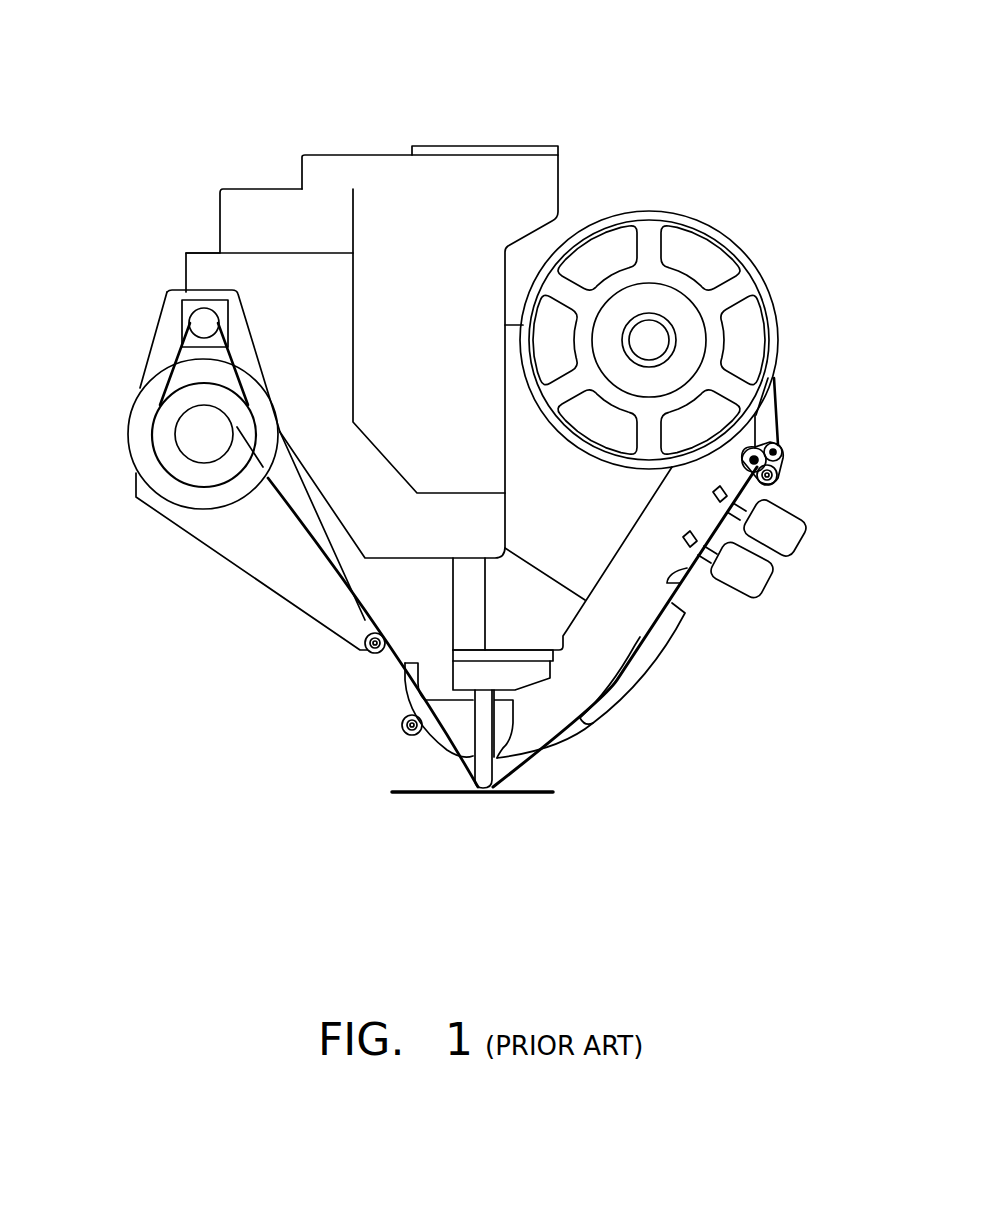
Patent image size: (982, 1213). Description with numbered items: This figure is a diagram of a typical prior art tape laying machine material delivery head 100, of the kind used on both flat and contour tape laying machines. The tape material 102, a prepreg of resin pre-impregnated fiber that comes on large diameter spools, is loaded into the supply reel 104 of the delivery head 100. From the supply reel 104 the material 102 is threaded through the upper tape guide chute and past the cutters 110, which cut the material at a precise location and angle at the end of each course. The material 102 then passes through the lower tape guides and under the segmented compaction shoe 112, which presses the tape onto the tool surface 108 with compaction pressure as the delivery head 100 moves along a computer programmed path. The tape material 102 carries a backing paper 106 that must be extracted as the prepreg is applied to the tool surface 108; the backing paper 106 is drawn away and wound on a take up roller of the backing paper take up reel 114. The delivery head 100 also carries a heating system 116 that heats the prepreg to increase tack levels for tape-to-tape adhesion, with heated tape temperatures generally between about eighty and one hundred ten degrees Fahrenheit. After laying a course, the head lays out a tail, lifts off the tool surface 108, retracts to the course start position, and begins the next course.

The material delivery head 100 is at (510, 79).
The tape material 102 is at (780, 445).
The supply reel 104 is at (647, 230).
The backing paper 106 is at (307, 533).
The tool surface 108 is at (560, 770).
The cutters 110 is at (783, 540).
The segmented compaction shoe 112 is at (460, 763).
The backing paper take up reel 114 is at (137, 430).
The heating system 116 is at (632, 682).